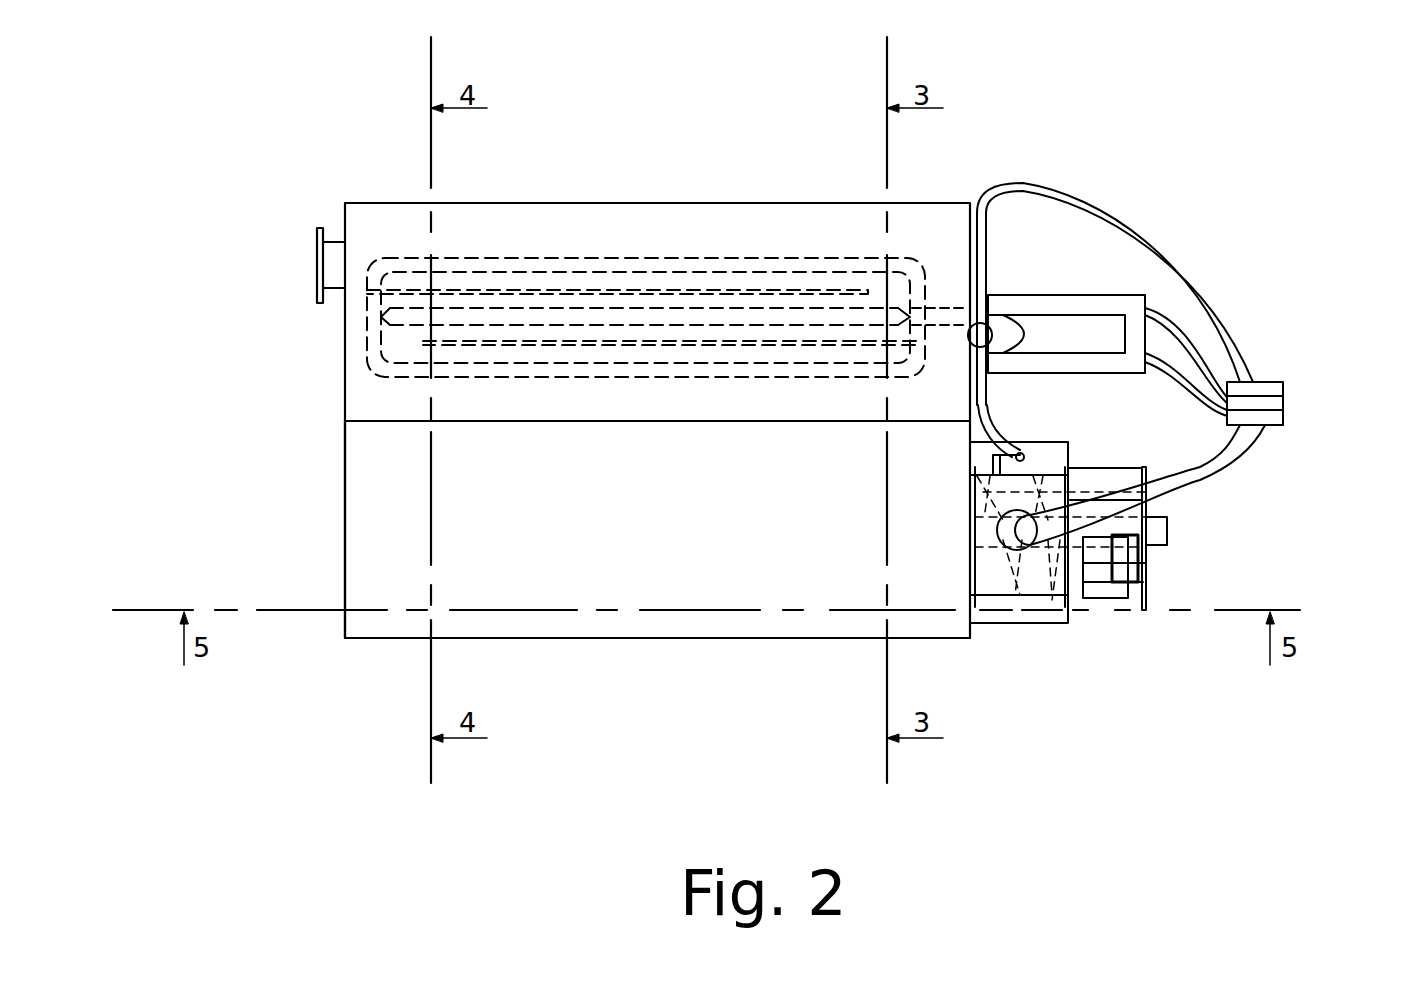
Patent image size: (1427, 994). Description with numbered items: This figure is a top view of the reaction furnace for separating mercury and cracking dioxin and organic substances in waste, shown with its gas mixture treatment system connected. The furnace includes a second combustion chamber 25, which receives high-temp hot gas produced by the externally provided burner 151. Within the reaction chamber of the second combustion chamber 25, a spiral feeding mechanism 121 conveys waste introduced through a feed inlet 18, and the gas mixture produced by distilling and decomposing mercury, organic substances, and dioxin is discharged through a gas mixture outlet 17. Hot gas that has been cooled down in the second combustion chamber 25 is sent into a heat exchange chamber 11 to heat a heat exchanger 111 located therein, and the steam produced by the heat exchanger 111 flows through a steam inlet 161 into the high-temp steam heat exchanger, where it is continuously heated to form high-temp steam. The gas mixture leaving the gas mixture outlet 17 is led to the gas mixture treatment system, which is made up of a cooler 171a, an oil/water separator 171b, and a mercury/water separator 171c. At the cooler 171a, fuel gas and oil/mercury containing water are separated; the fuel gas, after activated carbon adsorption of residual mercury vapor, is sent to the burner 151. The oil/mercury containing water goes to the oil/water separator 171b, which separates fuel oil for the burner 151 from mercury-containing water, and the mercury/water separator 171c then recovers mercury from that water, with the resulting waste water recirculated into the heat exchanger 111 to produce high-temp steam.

The heat exchange chamber 11 is at (932, 200).
The heat exchanger 111 is at (528, 318).
The burner 151 is at (1067, 330).
The cooler 171a is at (1265, 415).
The oil/water separator 171b is at (1265, 402).
The mercury/water separator 171c is at (1262, 388).
The steam inlet 161 is at (1023, 458).
The spiral feeding mechanism 121 is at (1087, 478).
The gas mixture outlet 17 is at (1003, 555).
The feed inlet 18 is at (1145, 600).
The second combustion chamber 25 is at (530, 622).